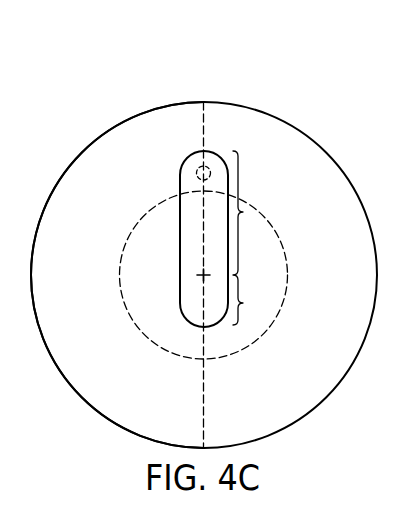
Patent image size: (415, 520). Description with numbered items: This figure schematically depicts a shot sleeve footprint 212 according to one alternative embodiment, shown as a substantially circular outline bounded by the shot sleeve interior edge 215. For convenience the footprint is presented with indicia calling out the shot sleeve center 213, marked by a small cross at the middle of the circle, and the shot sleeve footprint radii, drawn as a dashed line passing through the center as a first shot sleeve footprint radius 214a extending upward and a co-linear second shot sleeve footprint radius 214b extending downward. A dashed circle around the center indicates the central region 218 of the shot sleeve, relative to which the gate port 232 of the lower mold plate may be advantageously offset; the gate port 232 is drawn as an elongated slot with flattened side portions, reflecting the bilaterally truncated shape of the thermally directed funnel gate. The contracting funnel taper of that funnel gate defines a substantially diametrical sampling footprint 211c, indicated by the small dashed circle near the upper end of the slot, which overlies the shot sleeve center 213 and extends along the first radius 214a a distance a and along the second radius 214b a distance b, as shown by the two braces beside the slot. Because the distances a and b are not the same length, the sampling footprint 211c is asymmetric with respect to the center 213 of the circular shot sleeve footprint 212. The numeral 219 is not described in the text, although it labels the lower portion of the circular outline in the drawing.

The shot sleeve footprint 212 is at (246, 76).
The shot sleeve interior edge 215 is at (62, 192).
The disc body 219 is at (93, 378).
The central region 218 is at (126, 283).
The first shot sleeve footprint radius 214a is at (202, 148).
The second shot sleeve footprint radius 214b is at (202, 405).
The gate port 232 is at (213, 167).
The sampling footprint 211c is at (180, 167).
The shot sleeve center 213 is at (201, 277).